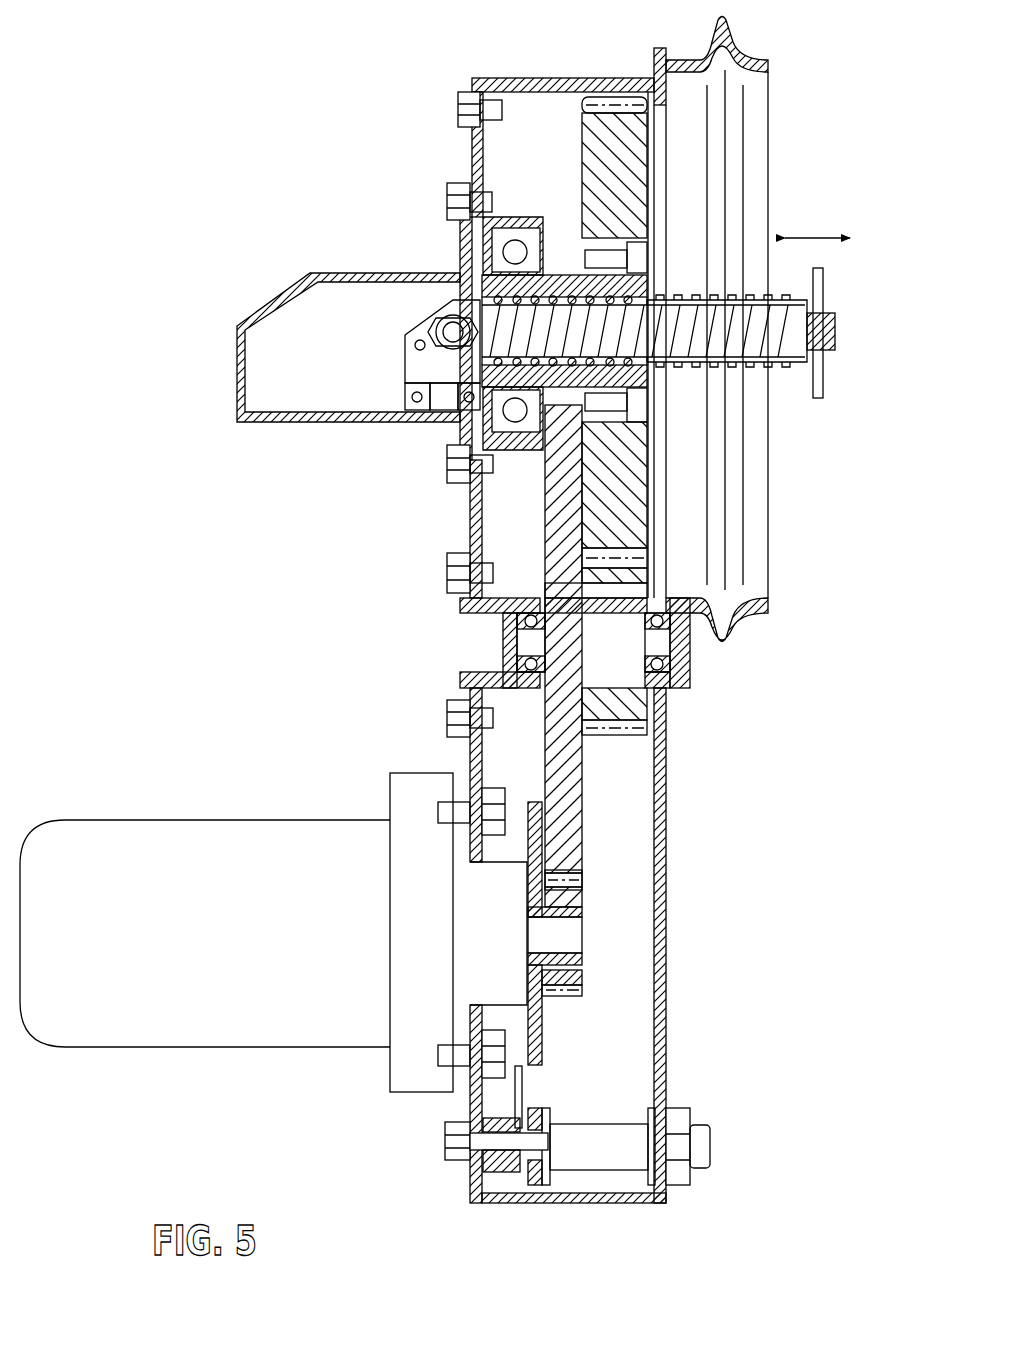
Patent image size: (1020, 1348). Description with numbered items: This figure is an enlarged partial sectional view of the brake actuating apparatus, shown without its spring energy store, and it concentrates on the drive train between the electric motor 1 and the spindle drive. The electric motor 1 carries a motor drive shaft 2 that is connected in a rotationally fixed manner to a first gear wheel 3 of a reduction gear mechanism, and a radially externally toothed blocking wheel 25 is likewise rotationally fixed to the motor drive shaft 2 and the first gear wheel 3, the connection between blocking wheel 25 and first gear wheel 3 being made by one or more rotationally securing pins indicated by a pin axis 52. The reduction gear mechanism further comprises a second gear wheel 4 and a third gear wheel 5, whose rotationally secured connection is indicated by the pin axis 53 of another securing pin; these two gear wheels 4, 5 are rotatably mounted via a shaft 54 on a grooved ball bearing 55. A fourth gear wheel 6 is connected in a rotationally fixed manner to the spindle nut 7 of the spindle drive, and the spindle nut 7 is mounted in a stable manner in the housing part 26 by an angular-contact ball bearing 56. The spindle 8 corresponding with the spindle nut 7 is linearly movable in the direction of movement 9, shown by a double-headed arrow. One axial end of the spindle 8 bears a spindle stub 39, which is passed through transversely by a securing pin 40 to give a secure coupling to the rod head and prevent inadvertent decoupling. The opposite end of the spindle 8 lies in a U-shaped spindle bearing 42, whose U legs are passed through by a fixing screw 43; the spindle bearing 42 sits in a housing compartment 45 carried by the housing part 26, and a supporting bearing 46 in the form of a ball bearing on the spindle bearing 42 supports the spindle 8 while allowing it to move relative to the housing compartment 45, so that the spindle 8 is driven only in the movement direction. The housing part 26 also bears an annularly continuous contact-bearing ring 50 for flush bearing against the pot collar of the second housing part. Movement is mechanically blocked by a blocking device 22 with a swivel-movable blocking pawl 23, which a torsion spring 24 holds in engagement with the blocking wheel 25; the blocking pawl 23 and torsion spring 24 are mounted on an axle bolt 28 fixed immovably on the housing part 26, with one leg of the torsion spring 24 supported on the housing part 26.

The electric motor 1 is at (157, 852).
The motor drive shaft 2 is at (560, 934).
The first gear wheel 3 is at (568, 898).
The second gear wheel 4 is at (568, 810).
The third gear wheel 5 is at (625, 705).
The fourth gear wheel 6 is at (620, 507).
The spindle nut 7 is at (637, 290).
The spindle 8 is at (684, 362).
The direction of movement 9 is at (815, 238).
The blocking device 22 is at (575, 1092).
The blocking pawl 23 is at (543, 1095).
The torsion spring 24 is at (505, 1172).
The blocking wheel 25 is at (543, 1045).
The housing part 26 is at (476, 142).
The axle bolt 28 is at (695, 1150).
The spindle stub 39 is at (835, 350).
The securing pin 40 is at (818, 385).
The spindle bearing 42 is at (405, 352).
The fixing screw 43 is at (448, 318).
The housing compartment 45 is at (285, 422).
The supporting bearing 46 is at (412, 398).
The contact-bearing ring 50 is at (725, 35).
The pin axis 52 is at (567, 968).
The pin axis 53 is at (542, 590).
The shaft 54 is at (690, 645).
The grooved ball bearing 55 is at (510, 620).
The angular-contact ball bearing 56 is at (513, 253).